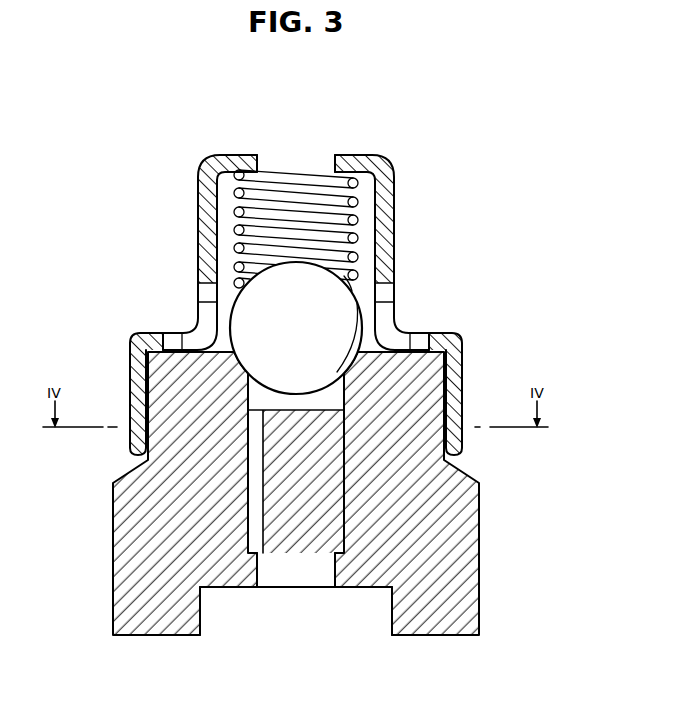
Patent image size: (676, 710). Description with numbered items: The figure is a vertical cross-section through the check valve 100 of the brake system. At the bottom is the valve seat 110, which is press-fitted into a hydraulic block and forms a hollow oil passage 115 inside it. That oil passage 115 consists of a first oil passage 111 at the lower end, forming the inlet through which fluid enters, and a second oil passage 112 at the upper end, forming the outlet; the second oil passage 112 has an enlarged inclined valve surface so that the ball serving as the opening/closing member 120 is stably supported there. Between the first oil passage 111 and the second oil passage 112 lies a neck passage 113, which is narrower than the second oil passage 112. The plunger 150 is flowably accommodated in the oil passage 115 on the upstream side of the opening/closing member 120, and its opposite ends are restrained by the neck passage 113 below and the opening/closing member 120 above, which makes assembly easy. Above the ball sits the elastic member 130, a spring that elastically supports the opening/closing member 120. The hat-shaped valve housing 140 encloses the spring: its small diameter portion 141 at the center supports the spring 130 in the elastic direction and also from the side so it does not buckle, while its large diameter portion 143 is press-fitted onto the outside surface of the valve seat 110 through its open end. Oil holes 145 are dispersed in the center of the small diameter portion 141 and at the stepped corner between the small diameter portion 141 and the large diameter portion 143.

The check valve 100 is at (181, 121).
The valve seat 110 is at (478, 545).
The first oil passage 111 is at (392, 606).
The second oil passage 112 is at (252, 398).
The neck passage 113 is at (272, 586).
The oil passage 115 is at (225, 513).
The opening/closing member 120 is at (244, 313).
The elastic member 130 is at (357, 204).
The valve housing 140 is at (325, 286).
The small diameter portion 141 is at (387, 226).
The large diameter portion 143 is at (450, 348).
The oil holes 145 is at (258, 155).
The plunger 150 is at (350, 503).